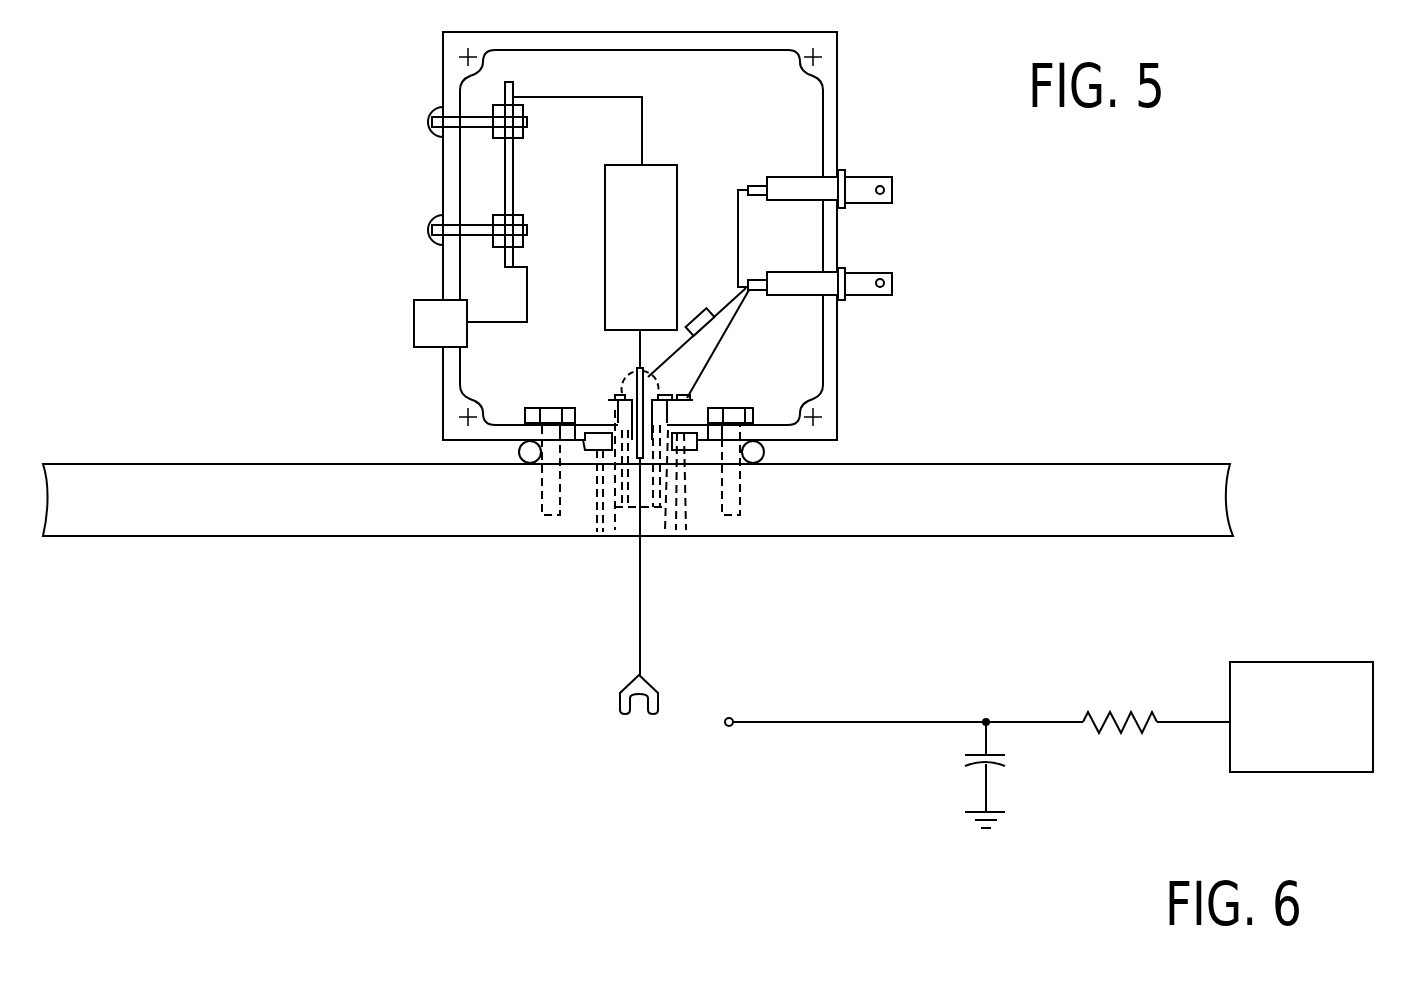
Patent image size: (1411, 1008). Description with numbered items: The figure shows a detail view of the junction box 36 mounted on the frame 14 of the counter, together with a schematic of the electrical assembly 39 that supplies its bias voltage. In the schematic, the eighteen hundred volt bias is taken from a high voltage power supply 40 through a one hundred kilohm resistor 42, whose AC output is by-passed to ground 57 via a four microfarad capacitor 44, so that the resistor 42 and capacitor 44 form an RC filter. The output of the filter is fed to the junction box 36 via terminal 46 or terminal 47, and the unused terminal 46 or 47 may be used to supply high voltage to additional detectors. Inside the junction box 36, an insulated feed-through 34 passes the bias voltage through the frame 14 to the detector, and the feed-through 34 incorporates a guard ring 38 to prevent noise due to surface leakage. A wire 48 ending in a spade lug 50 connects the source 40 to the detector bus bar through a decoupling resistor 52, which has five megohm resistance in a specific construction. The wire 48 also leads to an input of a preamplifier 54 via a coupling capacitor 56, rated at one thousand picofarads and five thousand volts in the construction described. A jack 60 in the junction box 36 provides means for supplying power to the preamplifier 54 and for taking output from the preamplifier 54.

In FIG. 5, the frame 14 is at (1088, 488).
In FIG. 5, the insulated feed-through 34 is at (658, 384).
In FIG. 5, the junction box 36 is at (837, 95).
In FIG. 5, the guard ring 38 is at (690, 400).
In FIG. 6, the electrical assembly 39 is at (1042, 677).
In FIG. 6, the high voltage power supply 40 is at (1297, 662).
In FIG. 6, the resistor 42 is at (1140, 733).
In FIG. 6, the capacitor 44 is at (965, 750).
In FIG. 5, the terminal 46 is at (885, 177).
In FIG. 5, the terminal 47 is at (892, 283).
In FIG. 5, the wire 48 is at (640, 565).
In FIG. 5, the spade lug 50 is at (620, 708).
In FIG. 5, the decoupling resistor 52 is at (700, 308).
In FIG. 5, the preamplifier 54 is at (513, 158).
In FIG. 5, the coupling capacitor 56 is at (657, 165).
In FIG. 6, the ground 57 is at (1000, 810).
In FIG. 5, the jack 60 is at (414, 322).